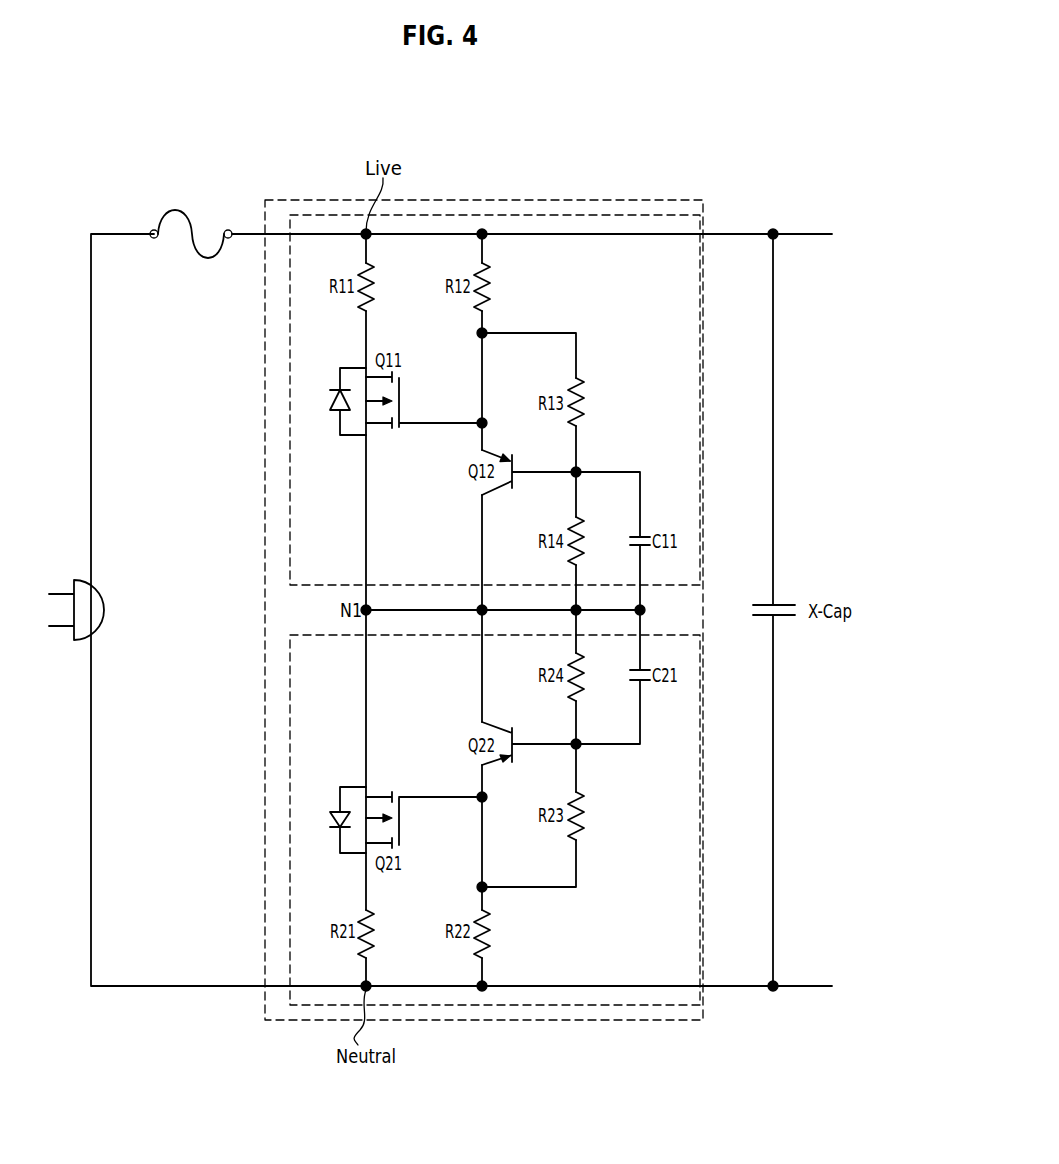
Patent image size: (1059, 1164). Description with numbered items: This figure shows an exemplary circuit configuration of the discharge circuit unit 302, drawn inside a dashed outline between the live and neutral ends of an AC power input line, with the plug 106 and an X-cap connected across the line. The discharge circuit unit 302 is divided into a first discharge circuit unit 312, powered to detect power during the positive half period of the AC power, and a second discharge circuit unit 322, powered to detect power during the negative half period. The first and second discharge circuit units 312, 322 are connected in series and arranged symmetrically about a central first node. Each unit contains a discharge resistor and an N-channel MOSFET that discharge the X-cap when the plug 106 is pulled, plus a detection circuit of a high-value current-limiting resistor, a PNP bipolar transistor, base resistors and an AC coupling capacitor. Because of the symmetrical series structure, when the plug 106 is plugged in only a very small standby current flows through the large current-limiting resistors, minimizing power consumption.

The plug 106 is at (78, 580).
The discharge circuit unit 302 is at (641, 200).
The first discharge circuit unit 312 is at (292, 400).
The second discharge circuit unit 322 is at (292, 760).